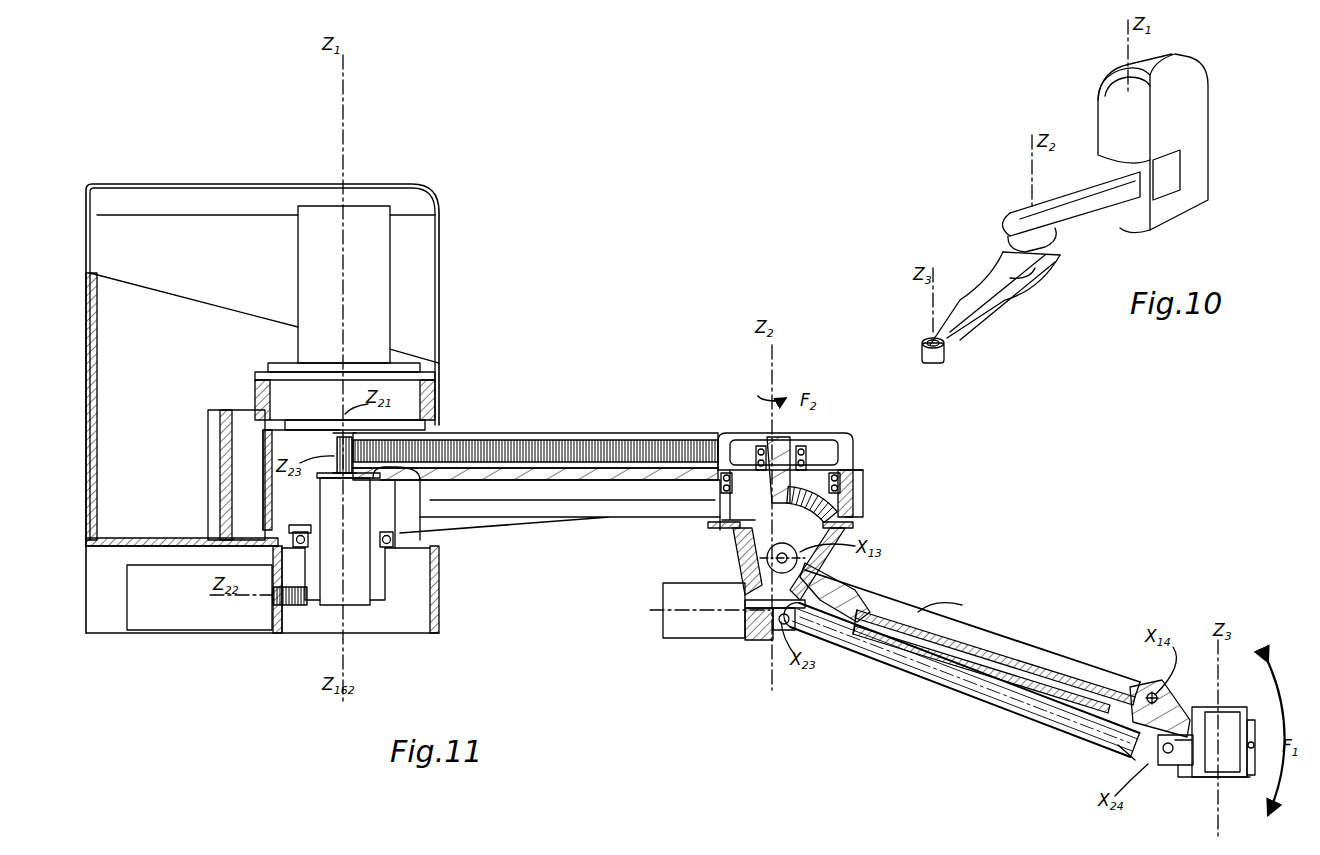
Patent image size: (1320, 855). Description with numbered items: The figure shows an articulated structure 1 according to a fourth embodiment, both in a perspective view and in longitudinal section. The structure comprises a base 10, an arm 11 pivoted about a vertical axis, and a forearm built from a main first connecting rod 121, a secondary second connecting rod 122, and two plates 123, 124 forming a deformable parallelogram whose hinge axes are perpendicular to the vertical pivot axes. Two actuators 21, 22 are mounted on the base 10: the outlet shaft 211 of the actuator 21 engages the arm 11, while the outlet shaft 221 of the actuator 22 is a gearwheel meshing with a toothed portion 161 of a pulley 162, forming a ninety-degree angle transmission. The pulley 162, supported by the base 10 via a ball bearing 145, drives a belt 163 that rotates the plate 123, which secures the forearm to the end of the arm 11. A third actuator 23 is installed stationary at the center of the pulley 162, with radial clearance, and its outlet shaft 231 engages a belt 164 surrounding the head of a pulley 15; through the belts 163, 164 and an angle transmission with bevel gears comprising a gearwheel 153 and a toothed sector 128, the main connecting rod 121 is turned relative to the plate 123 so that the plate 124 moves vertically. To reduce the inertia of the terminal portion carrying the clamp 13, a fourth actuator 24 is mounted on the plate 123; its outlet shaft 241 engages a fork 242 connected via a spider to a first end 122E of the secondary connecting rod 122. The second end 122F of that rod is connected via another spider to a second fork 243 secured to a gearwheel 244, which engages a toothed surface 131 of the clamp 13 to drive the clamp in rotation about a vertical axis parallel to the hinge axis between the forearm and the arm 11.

In FIG. 11, the articulated structure 1 is at (614, 268).
In FIG. 10, the articulated structure 1 is at (944, 134).
In FIG. 11, the base 10 is at (86, 422).
In FIG. 11, the arm 11 is at (500, 528).
In FIG. 10, the arm 11 is at (1075, 222).
In FIG. 11, the clamp 13 is at (1237, 706).
In FIG. 11, the pulley 15 is at (856, 437).
In FIG. 11, the actuator 21 is at (372, 273).
In FIG. 11, the actuator 22 is at (162, 608).
In FIG. 11, the actuator 23 is at (360, 600).
In FIG. 11, the actuator 24 is at (710, 610).
In FIG. 11, the main first connecting rod 121 is at (965, 608).
In FIG. 10, the main first connecting rod 121 is at (973, 290).
In FIG. 11, the secondary second connecting rod 122 is at (987, 690).
In FIG. 10, the secondary second connecting rod 122 is at (985, 318).
In FIG. 11, the first end 122E is at (842, 580).
In FIG. 11, the second end 122F is at (1125, 750).
In FIG. 11, the plate 123 is at (742, 547).
In FIG. 11, the plate 124 is at (1183, 705).
In FIG. 11, the toothed sector 128 is at (853, 523).
In FIG. 11, the toothed surface 131 is at (1261, 748).
In FIG. 11, the ball bearing 145 is at (297, 530).
In FIG. 11, the gearwheel 153 is at (853, 492).
In FIG. 11, the toothed portion 161 is at (397, 597).
In FIG. 11, the pulley 162 is at (398, 584).
In FIG. 11, the belt 163 is at (597, 500).
In FIG. 11, the belt 164 is at (570, 445).
In FIG. 11, the outlet shaft 211 is at (400, 412).
In FIG. 11, the outlet shaft 221 is at (302, 607).
In FIG. 11, the outlet shaft 231 is at (330, 447).
In FIG. 11, the outlet shaft 241 is at (755, 633).
In FIG. 11, the fork 242 is at (782, 640).
In FIG. 11, the second fork 243 is at (1163, 770).
In FIG. 11, the gearwheel 244 is at (1196, 777).